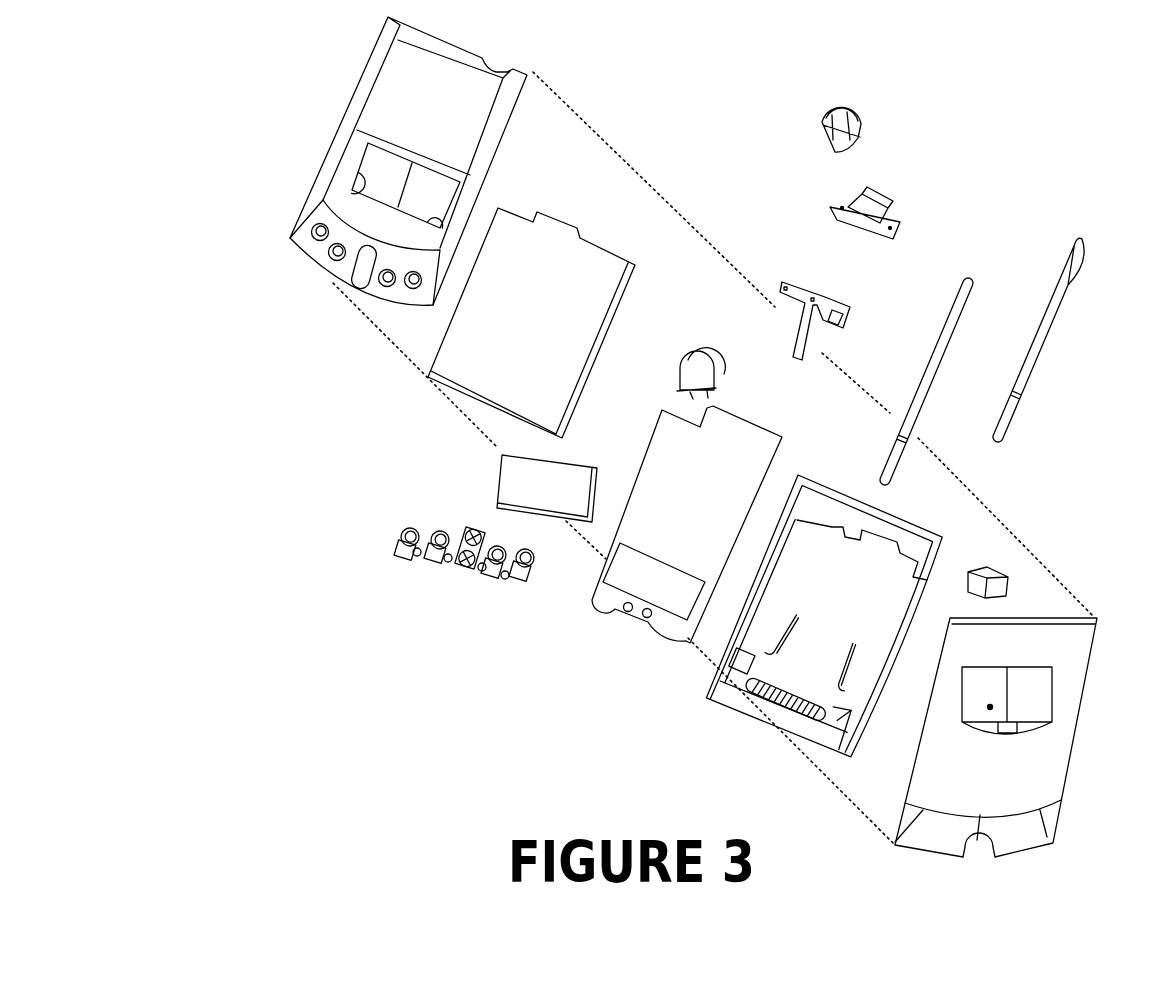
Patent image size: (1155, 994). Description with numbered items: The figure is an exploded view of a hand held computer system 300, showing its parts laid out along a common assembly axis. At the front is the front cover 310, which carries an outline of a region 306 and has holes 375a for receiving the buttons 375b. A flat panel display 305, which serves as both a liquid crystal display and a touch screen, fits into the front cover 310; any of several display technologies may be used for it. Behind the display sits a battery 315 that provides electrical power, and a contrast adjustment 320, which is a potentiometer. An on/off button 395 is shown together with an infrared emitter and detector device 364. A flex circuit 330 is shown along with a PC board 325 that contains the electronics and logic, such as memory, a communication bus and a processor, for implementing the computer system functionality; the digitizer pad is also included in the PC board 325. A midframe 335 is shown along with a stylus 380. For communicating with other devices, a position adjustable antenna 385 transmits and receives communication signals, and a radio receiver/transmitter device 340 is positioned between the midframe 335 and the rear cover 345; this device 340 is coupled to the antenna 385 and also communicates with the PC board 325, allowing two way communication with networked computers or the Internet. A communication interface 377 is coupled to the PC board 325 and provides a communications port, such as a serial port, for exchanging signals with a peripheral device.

The hand held computer system 300 is at (140, 62).
The flat panel display 305 is at (553, 329).
The region 306 is at (367, 165).
The front cover 310 is at (458, 118).
The battery 315 is at (567, 486).
The contrast adjustment 320 is at (694, 346).
The PC board 325 is at (713, 504).
The flex circuit 330 is at (832, 290).
The midframe 335 is at (857, 603).
The radio receiver/transmitter device 340 is at (987, 568).
The rear cover 345 is at (1013, 781).
The infrared emitter and detector device 364 is at (881, 191).
The holes 375a is at (312, 221).
The buttons 375b is at (408, 527).
The communication interface 377 is at (805, 686).
The stylus 380 is at (1058, 319).
The position adjustable antenna 385 is at (958, 343).
The on/off button 395 is at (866, 116).